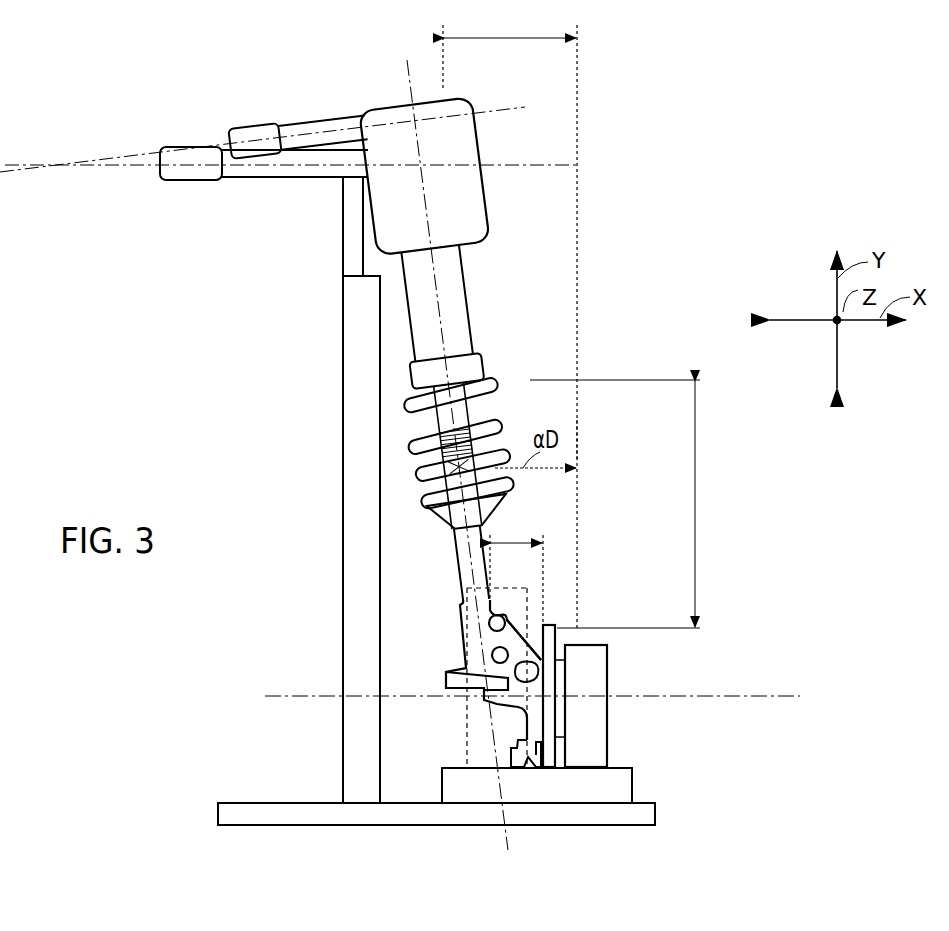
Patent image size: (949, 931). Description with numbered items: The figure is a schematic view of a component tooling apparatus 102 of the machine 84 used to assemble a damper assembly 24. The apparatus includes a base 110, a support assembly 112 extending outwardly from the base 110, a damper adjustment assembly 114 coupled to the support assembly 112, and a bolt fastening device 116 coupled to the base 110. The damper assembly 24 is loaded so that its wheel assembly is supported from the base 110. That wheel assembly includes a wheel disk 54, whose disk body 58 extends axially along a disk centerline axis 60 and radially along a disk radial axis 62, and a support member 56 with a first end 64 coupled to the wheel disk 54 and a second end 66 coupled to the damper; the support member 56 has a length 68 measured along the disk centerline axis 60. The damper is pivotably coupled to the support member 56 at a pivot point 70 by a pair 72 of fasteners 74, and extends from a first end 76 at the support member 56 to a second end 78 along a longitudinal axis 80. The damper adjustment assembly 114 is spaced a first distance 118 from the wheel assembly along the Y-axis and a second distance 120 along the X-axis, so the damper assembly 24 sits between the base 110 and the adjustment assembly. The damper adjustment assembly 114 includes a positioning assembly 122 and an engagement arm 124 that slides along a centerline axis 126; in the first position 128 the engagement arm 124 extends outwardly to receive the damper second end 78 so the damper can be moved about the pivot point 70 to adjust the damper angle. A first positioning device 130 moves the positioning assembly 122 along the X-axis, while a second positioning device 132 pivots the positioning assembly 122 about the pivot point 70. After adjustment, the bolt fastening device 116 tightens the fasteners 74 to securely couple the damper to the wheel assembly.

The second distance 120 is at (512, 35).
The centerline axis 126 is at (408, 72).
The second positioning device 132 is at (322, 125).
The damper adjustment assembly 114 is at (528, 142).
The machine 84 is at (655, 136).
The first positioning device 130 is at (250, 183).
The positioning assembly 122 is at (484, 196).
The component tooling apparatus 102 is at (568, 217).
The engagement arm 124 is at (470, 270).
The longitudinal axis 80 is at (442, 323).
The first position 128 is at (482, 338).
The second end 78 is at (490, 370).
The disk radial axis 62 is at (580, 441).
The damper assembly 24 is at (599, 512).
The first distance 118 is at (697, 505).
The support assembly 112 is at (345, 500).
The length 68 is at (515, 540).
The second end 66 is at (500, 588).
The bolt fastening device 116 is at (523, 586).
The support member 56 is at (509, 630).
The first end 76 is at (460, 598).
The fasteners 74 is at (492, 621).
The pivot point 70 is at (490, 641).
The wheel disk 54 is at (550, 632).
The disk body 58 is at (557, 642).
The disk centerline axis 60 is at (790, 696).
The pair of fasteners 72 is at (452, 668).
The base 110 is at (633, 785).
The first end 64 is at (540, 767).